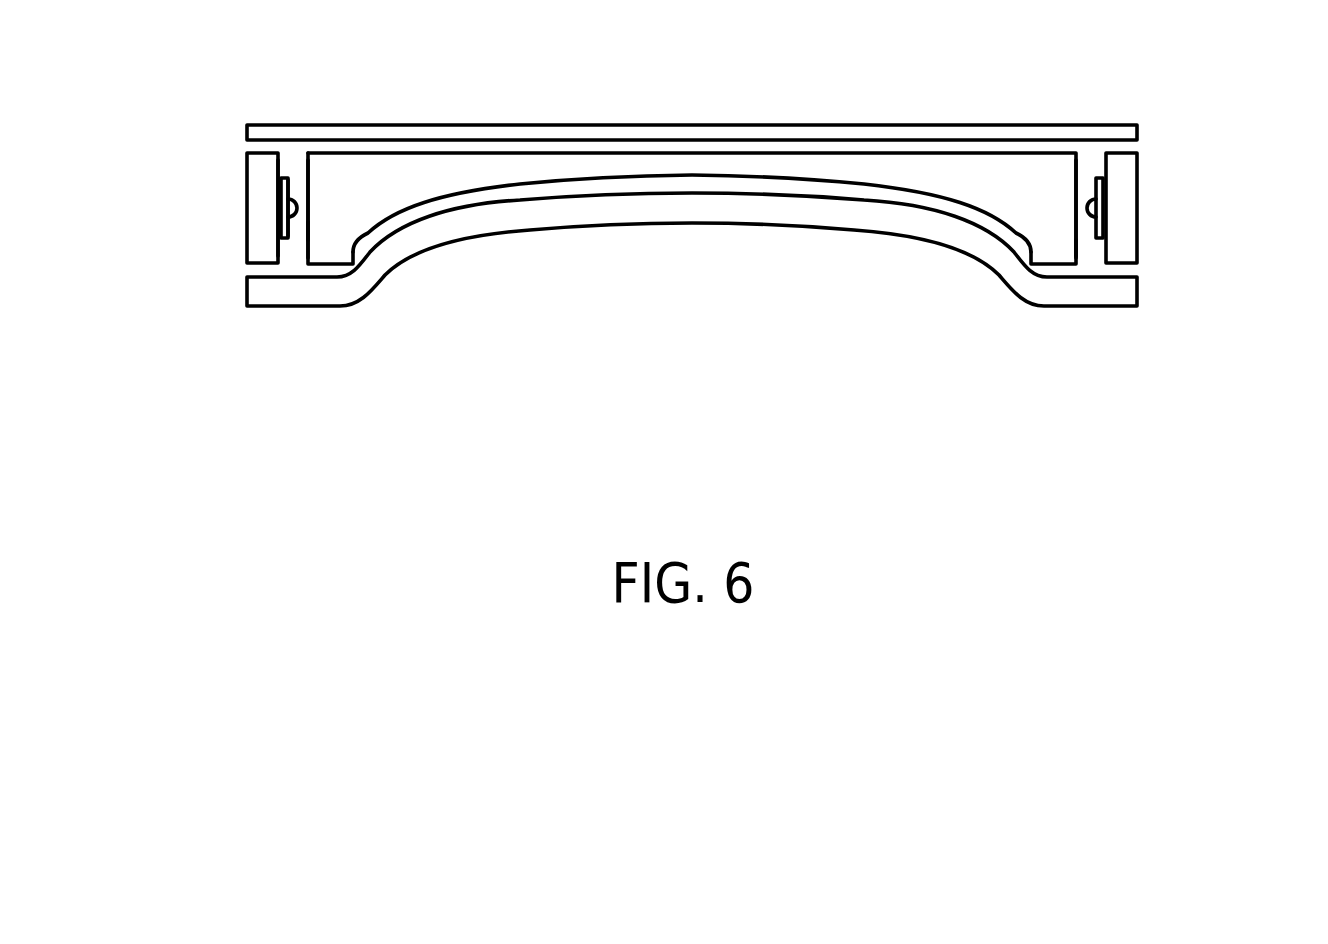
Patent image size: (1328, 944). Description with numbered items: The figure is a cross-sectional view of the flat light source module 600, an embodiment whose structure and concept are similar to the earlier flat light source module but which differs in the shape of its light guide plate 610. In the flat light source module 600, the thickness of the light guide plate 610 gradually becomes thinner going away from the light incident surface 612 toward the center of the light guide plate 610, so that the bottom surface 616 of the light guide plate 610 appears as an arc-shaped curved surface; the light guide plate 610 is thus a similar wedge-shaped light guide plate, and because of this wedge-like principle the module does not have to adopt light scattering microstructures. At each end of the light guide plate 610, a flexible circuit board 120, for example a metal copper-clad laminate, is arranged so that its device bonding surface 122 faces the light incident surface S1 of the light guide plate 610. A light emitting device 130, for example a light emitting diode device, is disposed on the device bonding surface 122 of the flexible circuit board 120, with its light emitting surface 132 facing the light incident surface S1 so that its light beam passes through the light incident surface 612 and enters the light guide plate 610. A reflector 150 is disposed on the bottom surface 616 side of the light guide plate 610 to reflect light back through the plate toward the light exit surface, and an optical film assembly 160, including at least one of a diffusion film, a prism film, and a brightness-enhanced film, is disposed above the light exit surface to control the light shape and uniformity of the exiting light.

The flat light source module 600 is at (717, 260).
The light guide plate 610 is at (700, 224).
The light incident surface 612 is at (306, 252).
The bottom surface 616 is at (458, 201).
The flexible circuit board 120 is at (692, 150).
The device bonding surface 122 is at (290, 168).
The light emitting device 130 is at (692, 148).
The light emitting surface 132 is at (300, 192).
The reflector 150 is at (1113, 290).
The optical film assembly 160 is at (1120, 133).
The light incident surface S1 is at (306, 230).